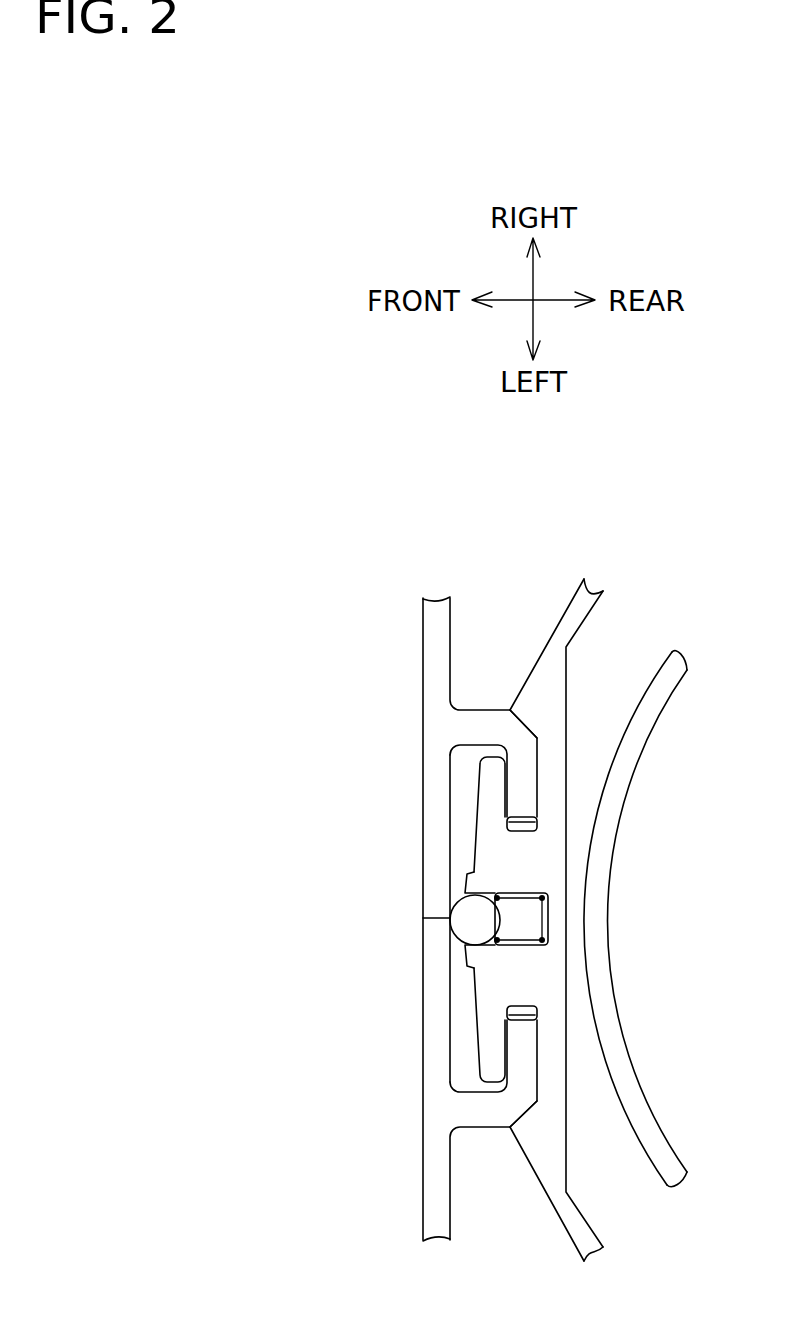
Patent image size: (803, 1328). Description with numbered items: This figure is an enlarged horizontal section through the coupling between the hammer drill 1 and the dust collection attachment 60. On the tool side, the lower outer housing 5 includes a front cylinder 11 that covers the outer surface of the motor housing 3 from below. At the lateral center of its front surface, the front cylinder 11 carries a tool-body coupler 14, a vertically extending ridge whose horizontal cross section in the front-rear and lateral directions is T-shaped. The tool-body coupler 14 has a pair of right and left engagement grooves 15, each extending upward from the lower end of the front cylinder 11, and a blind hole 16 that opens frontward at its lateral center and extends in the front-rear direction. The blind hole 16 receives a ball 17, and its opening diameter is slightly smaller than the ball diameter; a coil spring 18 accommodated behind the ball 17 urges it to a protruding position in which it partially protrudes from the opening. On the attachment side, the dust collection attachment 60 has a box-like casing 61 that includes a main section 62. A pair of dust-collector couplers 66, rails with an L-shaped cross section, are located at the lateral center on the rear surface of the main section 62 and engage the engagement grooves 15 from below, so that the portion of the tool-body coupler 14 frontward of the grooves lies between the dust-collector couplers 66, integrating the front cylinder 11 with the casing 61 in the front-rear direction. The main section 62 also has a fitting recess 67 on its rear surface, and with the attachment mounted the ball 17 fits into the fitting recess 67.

The hammer drill 1 is at (577, 530).
The motor housing 3 is at (678, 663).
The lower outer housing 5 is at (556, 920).
The front cylinder 11 is at (588, 597).
The tool-body coupler 14 is at (493, 862).
The engagement groove 15 is at (520, 837).
The blind hole 16 is at (548, 922).
The ball 17 is at (475, 920).
The coil spring 18 is at (497, 950).
The dust collection attachment 60 is at (403, 563).
The casing 61 is at (466, 919).
The main section 62 is at (437, 610).
The dust-collector coupler 66 is at (520, 777).
The fitting recess 67 is at (447, 918).